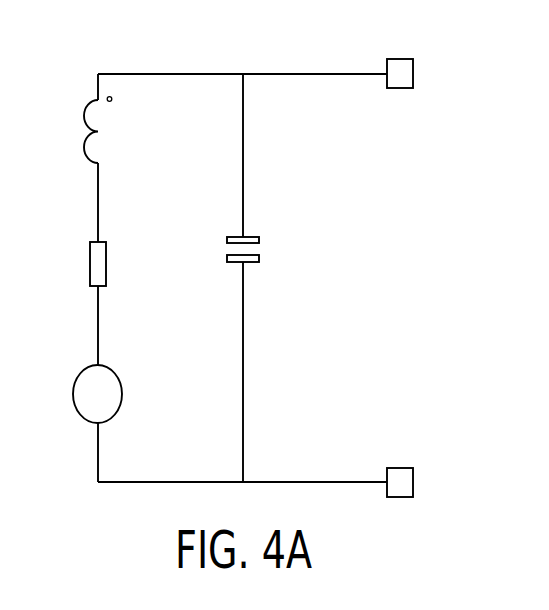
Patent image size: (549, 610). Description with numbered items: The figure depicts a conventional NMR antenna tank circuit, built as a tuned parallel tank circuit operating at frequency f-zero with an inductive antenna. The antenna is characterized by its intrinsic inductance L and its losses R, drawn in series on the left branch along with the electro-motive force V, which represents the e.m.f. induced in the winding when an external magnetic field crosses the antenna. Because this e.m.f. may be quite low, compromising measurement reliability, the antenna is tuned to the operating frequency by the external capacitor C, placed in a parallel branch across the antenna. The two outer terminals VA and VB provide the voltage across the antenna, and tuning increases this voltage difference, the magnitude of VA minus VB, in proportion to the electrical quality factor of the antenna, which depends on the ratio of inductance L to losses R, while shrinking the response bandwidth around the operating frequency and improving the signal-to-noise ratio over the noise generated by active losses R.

The intrinsic inductance L is at (83, 130).
The losses R is at (79, 264).
The electro-motive force V is at (88, 394).
The external capacitor C is at (254, 249).
The antenna terminal voltage VA is at (415, 76).
The antenna terminal voltage VB is at (415, 482).